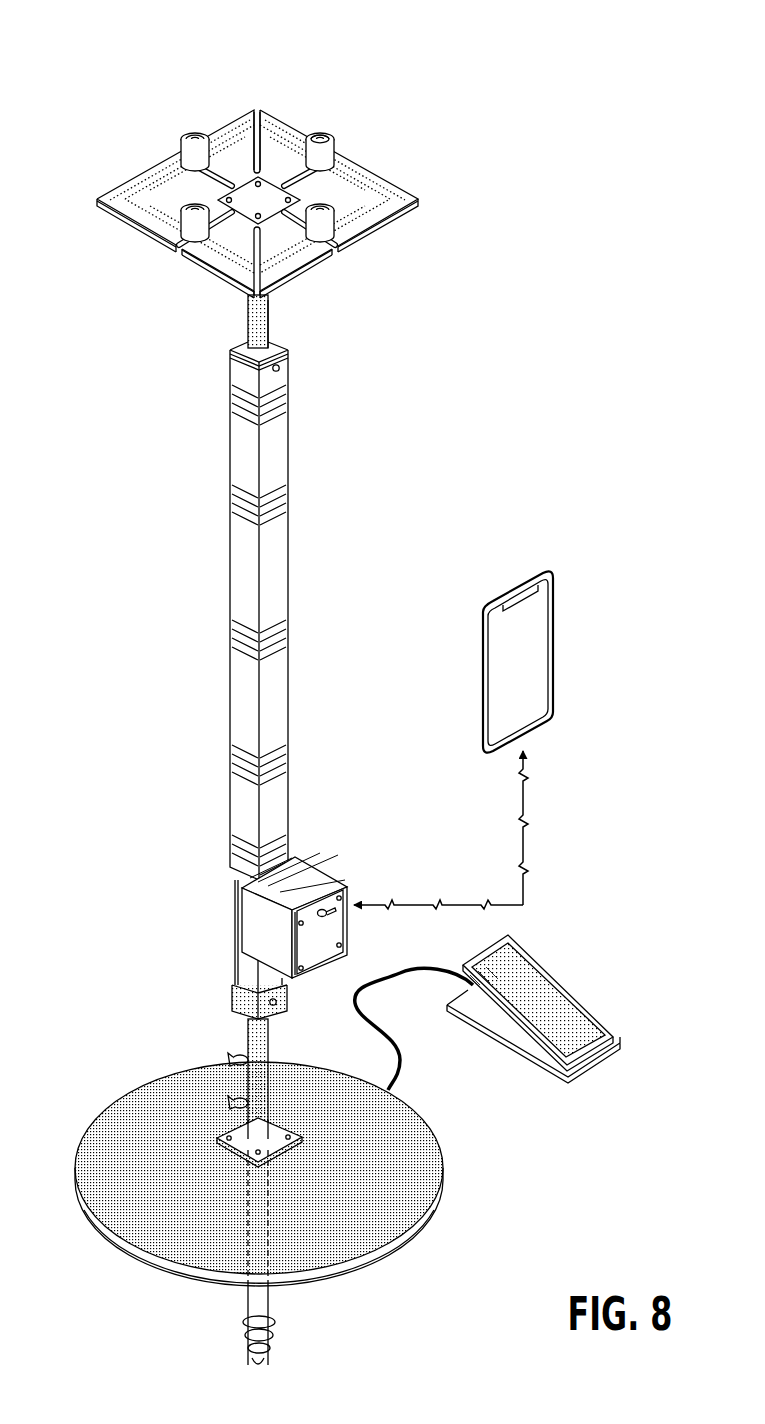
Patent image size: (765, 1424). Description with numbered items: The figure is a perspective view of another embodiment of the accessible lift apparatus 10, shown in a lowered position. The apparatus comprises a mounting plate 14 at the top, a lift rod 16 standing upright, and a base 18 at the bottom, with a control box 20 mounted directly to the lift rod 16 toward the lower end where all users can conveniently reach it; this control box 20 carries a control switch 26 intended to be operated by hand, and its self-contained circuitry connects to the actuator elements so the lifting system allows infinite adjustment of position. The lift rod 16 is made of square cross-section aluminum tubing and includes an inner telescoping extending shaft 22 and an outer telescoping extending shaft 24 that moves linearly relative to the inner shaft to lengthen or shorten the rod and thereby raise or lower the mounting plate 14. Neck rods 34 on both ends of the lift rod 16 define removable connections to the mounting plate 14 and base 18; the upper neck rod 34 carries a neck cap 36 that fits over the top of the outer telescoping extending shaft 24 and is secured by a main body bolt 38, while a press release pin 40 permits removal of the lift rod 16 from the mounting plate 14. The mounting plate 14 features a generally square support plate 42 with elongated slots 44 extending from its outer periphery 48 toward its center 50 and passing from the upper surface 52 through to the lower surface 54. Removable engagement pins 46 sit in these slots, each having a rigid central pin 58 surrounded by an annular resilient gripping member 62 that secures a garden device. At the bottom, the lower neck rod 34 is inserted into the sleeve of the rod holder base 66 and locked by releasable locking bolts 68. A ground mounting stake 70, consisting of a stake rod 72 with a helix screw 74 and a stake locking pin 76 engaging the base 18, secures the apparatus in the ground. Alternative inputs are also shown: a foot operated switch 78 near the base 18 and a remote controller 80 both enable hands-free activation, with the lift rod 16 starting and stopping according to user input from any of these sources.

The accessible lift apparatus 10 is at (499, 40).
The mounting plate 14 is at (272, 188).
The lift rod 16 is at (229, 611).
The base 18 is at (125, 1089).
The control box 20 is at (316, 873).
The inner telescoping extending shaft 22 is at (235, 963).
The outer telescoping extending shaft 24 is at (229, 718).
The control switch 26 is at (331, 914).
The neck rod 34 is at (247, 318).
The neck cap 36 is at (232, 1002).
The main body bolt 38 is at (281, 372).
The press release pin 40 is at (269, 318).
The support plate 42 is at (272, 109).
The elongated slots 44 is at (395, 201).
The removable engagement pins 46 is at (174, 146).
The outer periphery 48 is at (320, 263).
The center 50 is at (252, 196).
The upper surface 52 is at (245, 122).
The lower surface 54 is at (219, 281).
The rigid central pin 58 is at (320, 133).
The annular resilient gripping member 62 is at (336, 144).
The rod holder base 66 is at (270, 1083).
The releasable locking bolts 68 is at (236, 1057).
The ground mounting stake 70 is at (255, 1257).
The stake rod 72 is at (271, 1302).
The helix screw 74 is at (273, 1338).
The stake locking pin 76 is at (267, 1122).
The foot operated switch 78 is at (557, 978).
The remote controller 80 is at (553, 597).